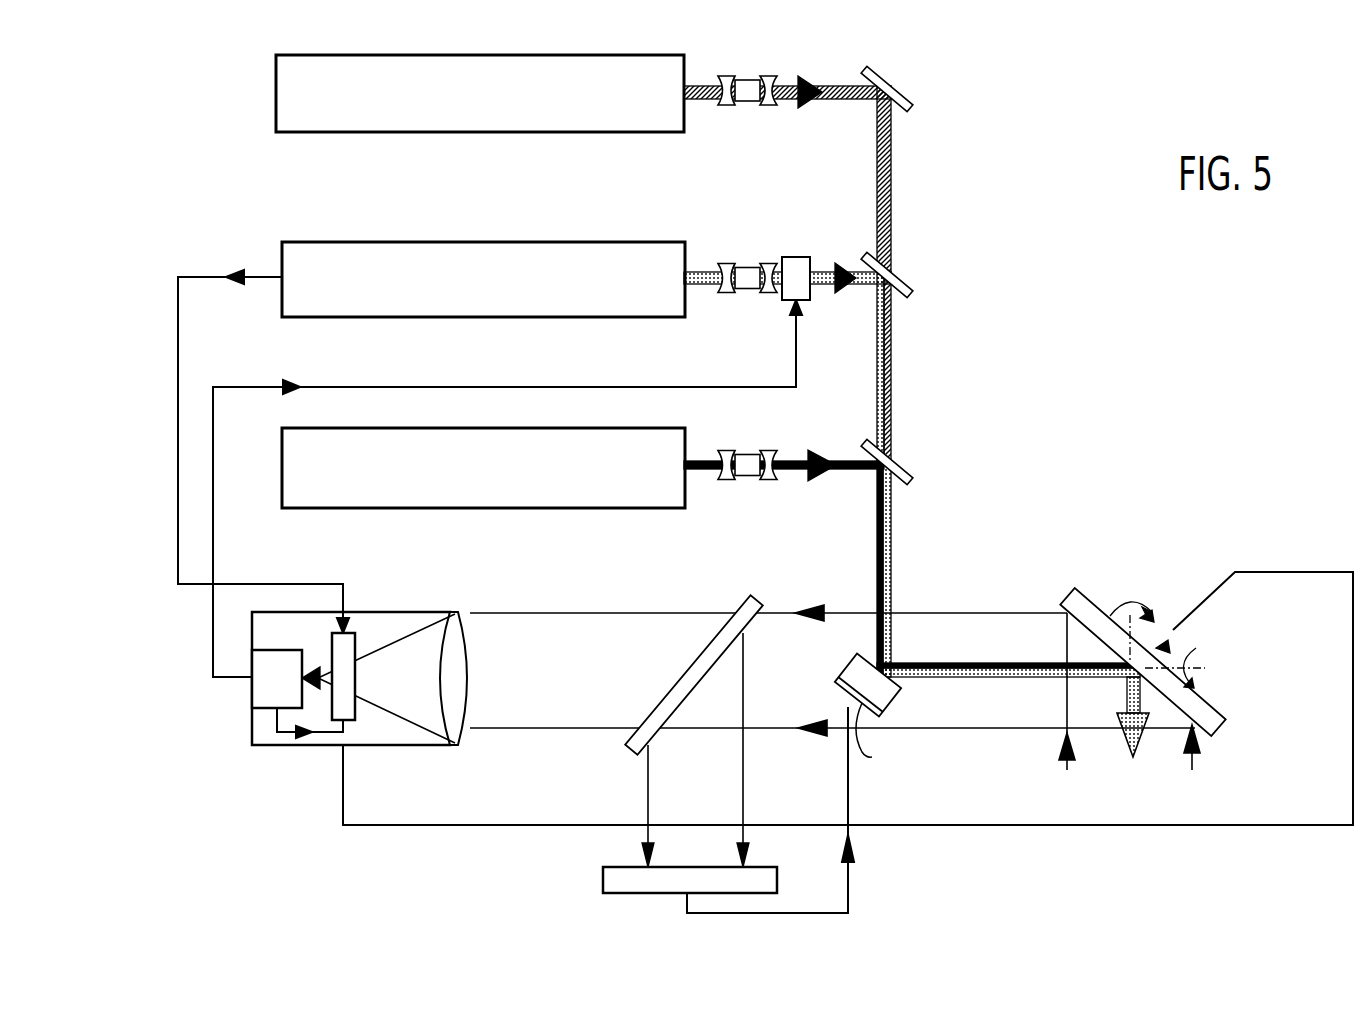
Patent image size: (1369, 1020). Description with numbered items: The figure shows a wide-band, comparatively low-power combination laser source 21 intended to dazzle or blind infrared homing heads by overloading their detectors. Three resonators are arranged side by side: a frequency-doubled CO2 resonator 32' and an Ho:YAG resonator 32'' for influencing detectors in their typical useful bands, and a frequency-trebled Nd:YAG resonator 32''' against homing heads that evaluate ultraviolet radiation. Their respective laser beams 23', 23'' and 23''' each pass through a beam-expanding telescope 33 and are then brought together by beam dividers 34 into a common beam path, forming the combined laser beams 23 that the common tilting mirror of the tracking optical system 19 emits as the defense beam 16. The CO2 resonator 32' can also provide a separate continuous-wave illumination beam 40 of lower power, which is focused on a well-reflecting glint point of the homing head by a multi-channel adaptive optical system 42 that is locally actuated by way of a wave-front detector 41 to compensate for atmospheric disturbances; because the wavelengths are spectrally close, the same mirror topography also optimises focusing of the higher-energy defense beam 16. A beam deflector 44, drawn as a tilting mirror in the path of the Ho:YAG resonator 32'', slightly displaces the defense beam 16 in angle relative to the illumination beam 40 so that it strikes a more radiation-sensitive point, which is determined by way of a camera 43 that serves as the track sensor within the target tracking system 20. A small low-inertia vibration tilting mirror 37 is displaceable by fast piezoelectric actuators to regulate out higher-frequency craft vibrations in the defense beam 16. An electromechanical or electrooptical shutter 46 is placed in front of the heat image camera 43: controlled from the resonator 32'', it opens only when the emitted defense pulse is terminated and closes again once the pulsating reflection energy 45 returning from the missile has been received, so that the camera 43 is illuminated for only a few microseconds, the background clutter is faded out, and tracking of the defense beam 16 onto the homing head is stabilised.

The defense beam 16 is at (1130, 757).
The optical system 19 is at (1202, 708).
The target tracking system 20 is at (265, 733).
The laser source 21 is at (1123, 383).
The laser beams 23 is at (1008, 474).
The laser beam 23' is at (787, 63).
The laser beam 23'' is at (787, 247).
The laser beam 23''' is at (784, 443).
The CO2 resonator 32' is at (480, 119).
The Ho:YAG resonator 32'' is at (483, 307).
The Nd:YAG resonator 32''' is at (483, 495).
The beam-expanding telescope 33 is at (748, 105).
The beam divider 34 is at (893, 266).
The vibration tilting mirror 37 is at (1078, 605).
The illumination beam 40 is at (808, 80).
The wave-front detector 41 is at (612, 880).
The adaptive optical system 42 is at (850, 675).
The camera 43 is at (262, 693).
The beam deflector 44 is at (791, 257).
The reflection energy 45 is at (815, 607).
The shutter 46 is at (338, 640).